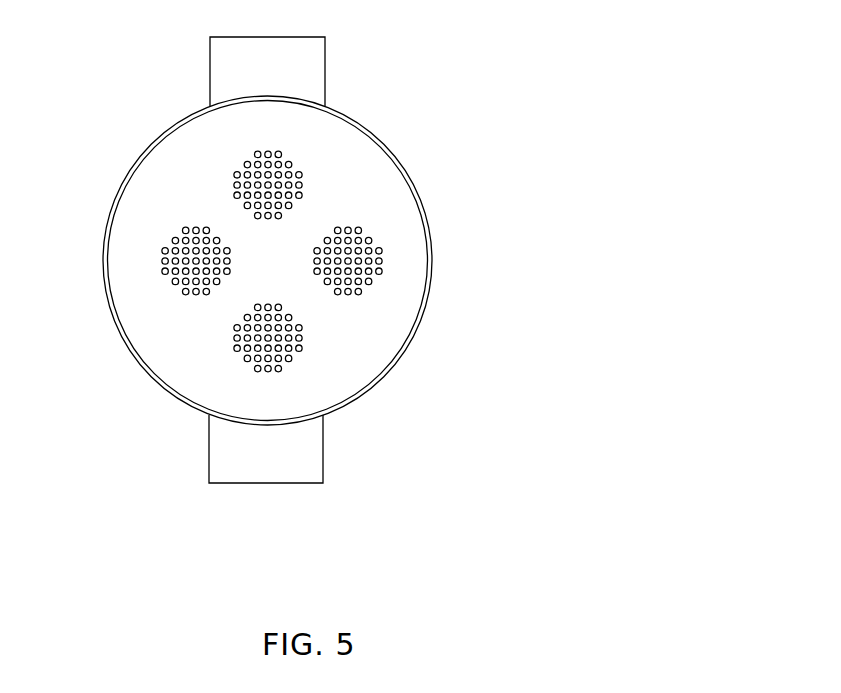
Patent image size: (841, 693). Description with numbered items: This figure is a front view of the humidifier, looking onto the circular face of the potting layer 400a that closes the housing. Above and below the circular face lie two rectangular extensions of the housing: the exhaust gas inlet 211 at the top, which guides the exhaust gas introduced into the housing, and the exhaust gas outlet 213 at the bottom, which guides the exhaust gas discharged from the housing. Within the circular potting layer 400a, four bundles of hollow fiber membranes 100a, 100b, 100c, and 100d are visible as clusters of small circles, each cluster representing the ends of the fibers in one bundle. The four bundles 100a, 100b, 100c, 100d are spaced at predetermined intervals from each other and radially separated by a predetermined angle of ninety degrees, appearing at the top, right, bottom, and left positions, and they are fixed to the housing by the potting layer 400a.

The exhaust gas inlet 211 is at (318, 77).
The exhaust gas outlet 213 is at (307, 452).
The potting layer 400a is at (383, 343).
The bundle of hollow fiber membranes 100a is at (273, 185).
The bundle of hollow fiber membranes 100b is at (368, 266).
The bundle of hollow fiber membranes 100c is at (238, 348).
The bundle of hollow fiber membranes 100d is at (167, 260).